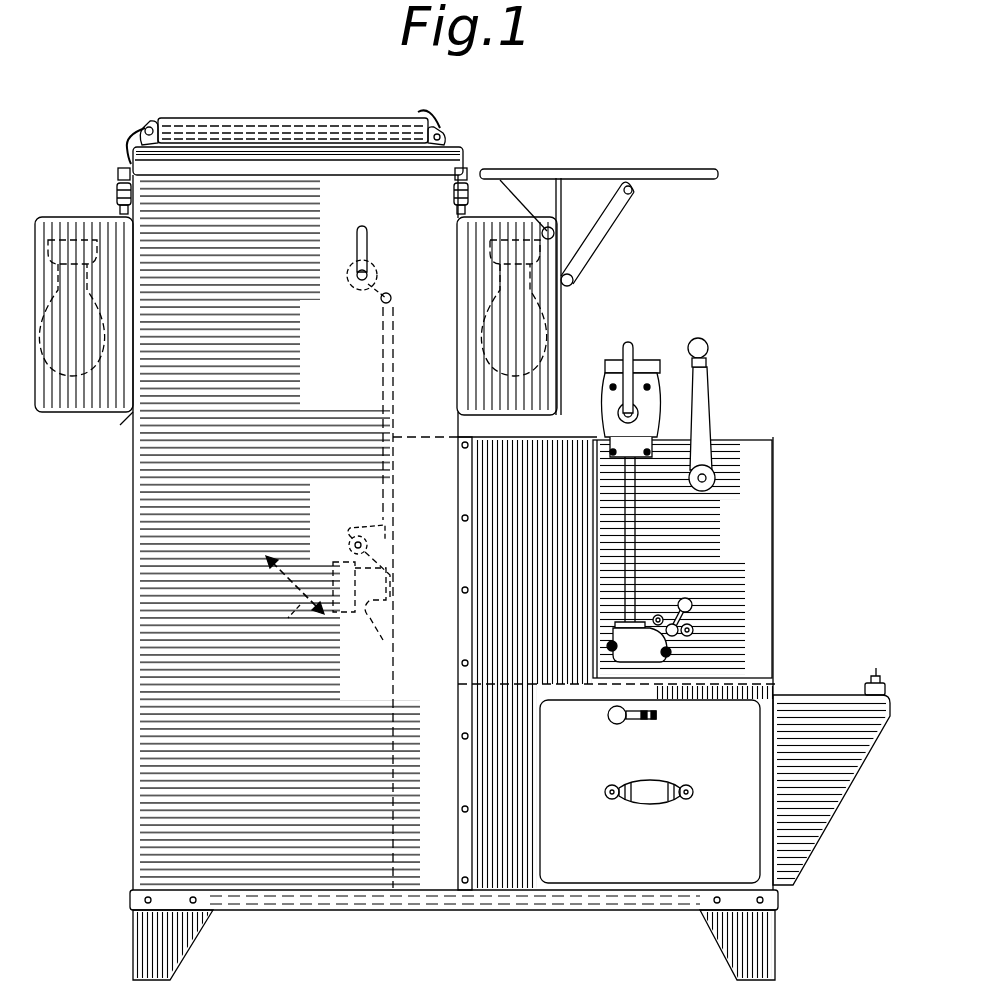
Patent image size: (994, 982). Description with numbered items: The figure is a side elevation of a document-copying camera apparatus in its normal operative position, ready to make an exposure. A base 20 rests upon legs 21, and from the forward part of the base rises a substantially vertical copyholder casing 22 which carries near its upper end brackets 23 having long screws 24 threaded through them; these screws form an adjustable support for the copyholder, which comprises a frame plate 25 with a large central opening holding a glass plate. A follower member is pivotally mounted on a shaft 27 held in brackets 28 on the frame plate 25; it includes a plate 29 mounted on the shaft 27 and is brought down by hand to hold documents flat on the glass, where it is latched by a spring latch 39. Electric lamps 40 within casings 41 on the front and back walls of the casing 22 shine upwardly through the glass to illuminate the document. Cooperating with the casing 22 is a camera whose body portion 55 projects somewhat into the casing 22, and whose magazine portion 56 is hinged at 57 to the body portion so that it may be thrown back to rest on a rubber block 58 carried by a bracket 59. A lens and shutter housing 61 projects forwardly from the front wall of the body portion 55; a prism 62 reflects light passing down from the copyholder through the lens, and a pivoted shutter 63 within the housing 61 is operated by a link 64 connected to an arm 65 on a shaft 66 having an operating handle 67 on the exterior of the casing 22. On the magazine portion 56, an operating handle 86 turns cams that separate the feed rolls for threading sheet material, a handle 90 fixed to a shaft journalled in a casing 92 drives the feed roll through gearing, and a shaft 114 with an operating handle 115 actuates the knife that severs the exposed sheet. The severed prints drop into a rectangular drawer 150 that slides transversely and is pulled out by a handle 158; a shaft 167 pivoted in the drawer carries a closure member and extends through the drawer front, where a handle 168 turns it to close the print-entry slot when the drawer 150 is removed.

The base 20 is at (388, 912).
The legs 21 is at (190, 935).
The casing 22 is at (140, 567).
The brackets 23 is at (117, 194).
The screws 24 is at (118, 174).
The frame plate 25 is at (462, 160).
The shaft 27 is at (152, 121).
The brackets 28 is at (128, 140).
The plate 29 is at (307, 108).
The spring latch 39 is at (447, 140).
The electric lamps 40 is at (485, 345).
The casings 41 is at (126, 412).
The body portion 55 is at (520, 432).
The magazine portion 56 is at (768, 430).
The hinge 57 is at (778, 690).
The rubber block 58 is at (873, 667).
The bracket 59 is at (845, 815).
The lens and shutter housing 61 is at (355, 530).
The prism 62 is at (293, 606).
The pivoted shutter 63 is at (393, 596).
The link 64 is at (380, 335).
The arm 65 is at (378, 300).
The shaft 66 is at (346, 280).
The operating handle 67 is at (368, 240).
The operating handle 86 is at (700, 615).
The handle 90 is at (634, 352).
The casing 92 is at (672, 393).
The shaft 114 is at (712, 486).
The operating handle 115 is at (710, 395).
The drawer 150 is at (635, 838).
The handle 158 is at (662, 778).
The shaft 167 is at (612, 723).
The handle 168 is at (648, 720).